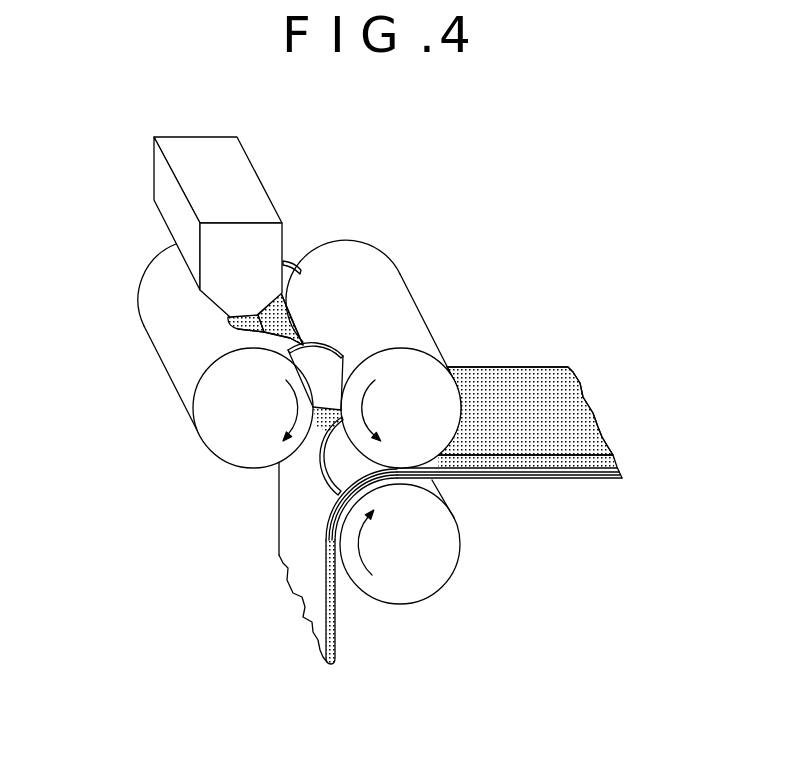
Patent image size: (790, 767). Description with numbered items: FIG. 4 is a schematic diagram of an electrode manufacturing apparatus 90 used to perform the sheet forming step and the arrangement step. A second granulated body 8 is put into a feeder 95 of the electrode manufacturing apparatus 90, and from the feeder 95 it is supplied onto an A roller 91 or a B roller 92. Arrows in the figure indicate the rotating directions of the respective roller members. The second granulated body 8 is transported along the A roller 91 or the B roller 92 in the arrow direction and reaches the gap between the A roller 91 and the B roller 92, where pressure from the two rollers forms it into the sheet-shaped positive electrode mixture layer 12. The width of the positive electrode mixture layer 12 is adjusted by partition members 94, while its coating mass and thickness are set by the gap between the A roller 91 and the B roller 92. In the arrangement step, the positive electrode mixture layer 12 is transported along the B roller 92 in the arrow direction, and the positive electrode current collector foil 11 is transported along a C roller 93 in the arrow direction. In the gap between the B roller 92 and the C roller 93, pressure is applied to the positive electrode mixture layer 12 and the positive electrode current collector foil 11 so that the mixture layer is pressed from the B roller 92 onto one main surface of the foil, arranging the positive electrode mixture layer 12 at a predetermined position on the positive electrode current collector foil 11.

The electrode manufacturing apparatus 90 is at (113, 164).
The feeder 95 is at (203, 142).
The partition members 94 is at (288, 265).
The B roller 92 is at (370, 252).
The A roller 91 is at (155, 275).
The second granulated body 8 is at (230, 322).
The positive electrode mixture layer 12 is at (530, 373).
The C roller 93 is at (447, 572).
The positive electrode current collector foil 11 is at (303, 585).